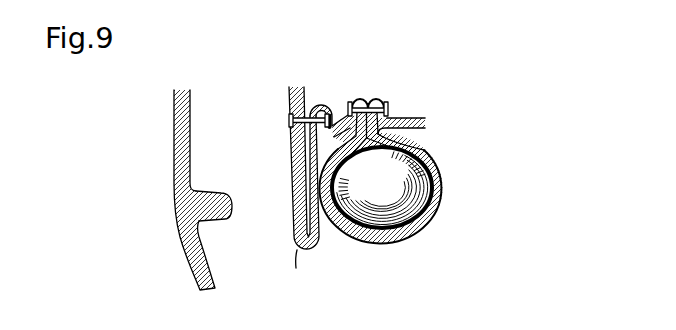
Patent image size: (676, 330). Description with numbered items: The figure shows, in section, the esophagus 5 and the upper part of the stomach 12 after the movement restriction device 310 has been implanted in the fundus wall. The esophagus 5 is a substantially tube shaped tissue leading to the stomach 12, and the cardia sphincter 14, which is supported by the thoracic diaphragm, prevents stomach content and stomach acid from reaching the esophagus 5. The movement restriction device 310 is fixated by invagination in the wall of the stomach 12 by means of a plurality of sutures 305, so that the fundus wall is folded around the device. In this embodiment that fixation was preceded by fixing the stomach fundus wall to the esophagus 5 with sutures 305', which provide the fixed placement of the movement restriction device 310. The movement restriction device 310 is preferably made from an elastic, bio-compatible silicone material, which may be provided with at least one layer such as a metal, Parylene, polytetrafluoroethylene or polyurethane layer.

The esophagus 5 is at (175, 135).
The cardia sphincter 14 is at (222, 218).
The stomach 12 is at (423, 119).
The sutures 305 is at (392, 86).
The sutures 305' is at (282, 99).
The movement restriction device 310 is at (397, 192).